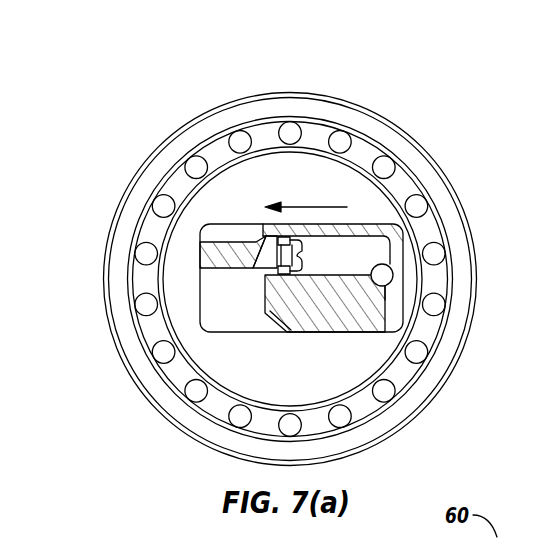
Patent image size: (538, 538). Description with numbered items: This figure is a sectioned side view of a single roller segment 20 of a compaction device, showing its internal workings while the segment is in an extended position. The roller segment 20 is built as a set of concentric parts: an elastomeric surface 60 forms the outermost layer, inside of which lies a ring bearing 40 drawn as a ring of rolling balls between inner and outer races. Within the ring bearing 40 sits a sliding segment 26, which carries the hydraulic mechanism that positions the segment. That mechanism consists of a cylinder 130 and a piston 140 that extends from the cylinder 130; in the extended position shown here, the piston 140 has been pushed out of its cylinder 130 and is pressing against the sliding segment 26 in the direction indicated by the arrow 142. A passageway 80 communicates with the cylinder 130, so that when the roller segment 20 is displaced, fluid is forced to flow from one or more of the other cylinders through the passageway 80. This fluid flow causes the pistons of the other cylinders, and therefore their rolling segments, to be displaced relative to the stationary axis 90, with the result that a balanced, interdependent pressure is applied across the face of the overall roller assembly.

The roller segment 20 is at (320, 78).
The sliding segment 26 is at (232, 185).
The ring bearing 40 is at (180, 372).
The elastomeric surface 60 is at (136, 171).
The passageway 80 is at (388, 281).
The stationary axis 90 is at (362, 317).
The cylinder 130 is at (352, 253).
The piston 140 is at (215, 259).
The arrow 142 is at (300, 206).